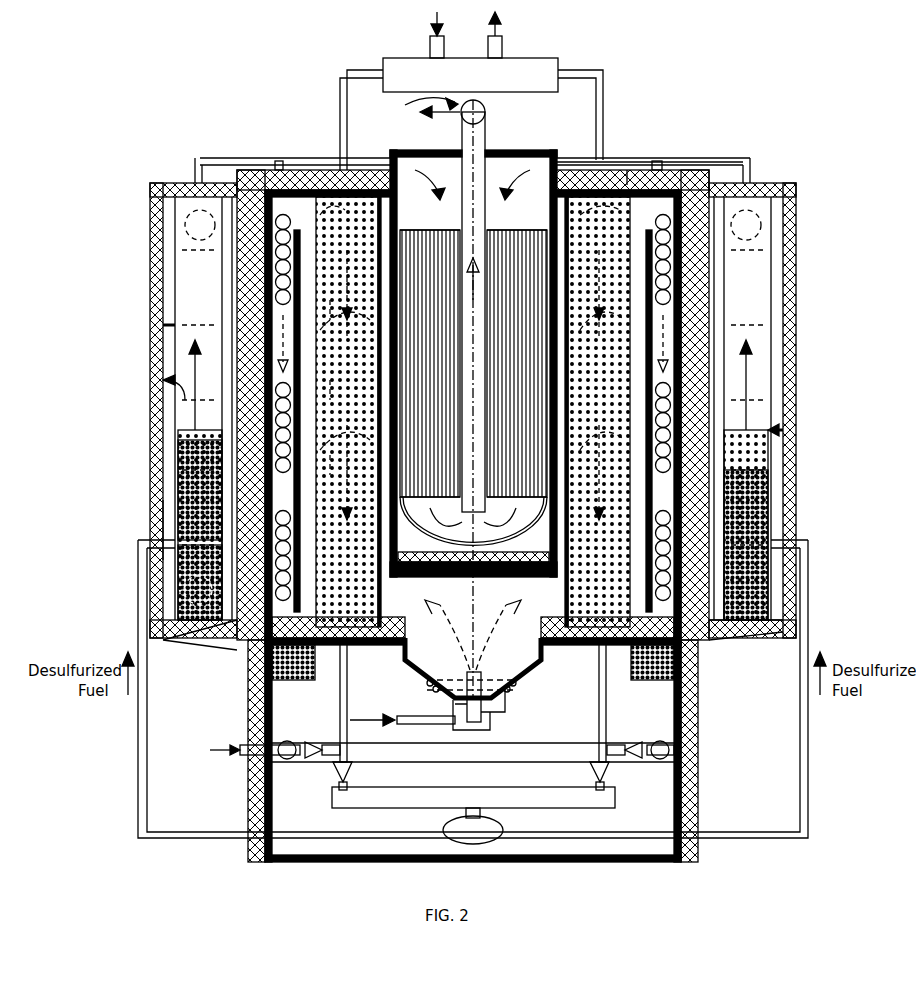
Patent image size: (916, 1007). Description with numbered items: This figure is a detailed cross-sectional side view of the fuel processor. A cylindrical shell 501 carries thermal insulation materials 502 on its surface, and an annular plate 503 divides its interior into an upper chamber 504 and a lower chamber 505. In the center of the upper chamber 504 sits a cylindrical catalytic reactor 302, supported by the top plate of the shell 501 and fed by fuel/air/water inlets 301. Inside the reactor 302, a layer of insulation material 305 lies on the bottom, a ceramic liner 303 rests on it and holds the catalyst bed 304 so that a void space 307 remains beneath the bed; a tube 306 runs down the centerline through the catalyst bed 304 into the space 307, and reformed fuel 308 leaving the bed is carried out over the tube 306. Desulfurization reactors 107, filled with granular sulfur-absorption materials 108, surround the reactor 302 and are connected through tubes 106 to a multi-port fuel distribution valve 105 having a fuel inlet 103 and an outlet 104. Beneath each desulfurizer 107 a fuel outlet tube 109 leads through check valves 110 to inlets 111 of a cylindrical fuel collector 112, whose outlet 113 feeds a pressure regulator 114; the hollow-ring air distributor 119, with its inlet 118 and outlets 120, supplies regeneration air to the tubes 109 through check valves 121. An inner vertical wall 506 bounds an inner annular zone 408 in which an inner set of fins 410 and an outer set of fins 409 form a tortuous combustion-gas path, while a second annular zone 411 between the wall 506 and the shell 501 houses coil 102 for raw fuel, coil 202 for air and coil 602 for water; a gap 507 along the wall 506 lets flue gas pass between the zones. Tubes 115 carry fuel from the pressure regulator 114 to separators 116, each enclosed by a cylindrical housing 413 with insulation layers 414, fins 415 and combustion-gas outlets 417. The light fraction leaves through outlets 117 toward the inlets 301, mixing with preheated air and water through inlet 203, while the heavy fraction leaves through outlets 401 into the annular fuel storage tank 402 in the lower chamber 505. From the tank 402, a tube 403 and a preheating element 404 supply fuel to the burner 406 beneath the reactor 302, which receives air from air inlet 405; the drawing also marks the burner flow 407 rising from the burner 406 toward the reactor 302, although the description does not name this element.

The coil 102 is at (700, 195).
The fuel inlet 103 is at (430, 40).
The outlet 104 is at (500, 38).
The multi-port fuel distribution valve 105 is at (543, 66).
The fuel outlet/air inlet tubes 106 is at (345, 72).
The desulfurization reactors 107 is at (629, 170).
The granular sulfur-absorption materials 108 is at (600, 352).
The fuel outlet tube 109 is at (600, 705).
The check valves 110 is at (640, 755).
The inlets 111 is at (610, 776).
The fuel collector 112 is at (600, 799).
The outlet 113 is at (480, 815).
The pressure regulator 114 is at (473, 830).
The tubes 115 is at (808, 745).
The separators 116 is at (790, 430).
The outlets 117 is at (748, 160).
The inlet 118 is at (285, 752).
The air distributor 119 is at (265, 752).
The outlets 120 is at (318, 765).
The check valves 121 is at (318, 745).
The coil 202 is at (715, 545).
The inlet 203 is at (657, 161).
The fuel/air/water inlets 301 is at (615, 158).
The catalytic reactor 302 is at (515, 152).
The ceramic liner 303 is at (472, 197).
The catalyst bed 304 is at (507, 287).
The insulation material 305 is at (545, 500).
The tube 306 is at (475, 140).
The void space 307 is at (549, 487).
The reformed fuel 308 is at (419, 110).
The outlets 401 is at (728, 632).
The annular fuel storage tank 402 is at (680, 670).
The tube 403 is at (517, 684).
The preheating element 404 is at (513, 689).
The air inlet 405 is at (427, 710).
The burner 406 is at (478, 676).
The flow 407 is at (473, 630).
The inner annular zone 408 is at (250, 530).
The outer set of fins 409 is at (195, 490).
The inner set of fins 410 is at (240, 433).
The second annular zone 411 is at (283, 380).
The cylindrical housing 413 is at (185, 380).
The insulation layers 414 is at (158, 342).
The fins 415 is at (172, 325).
The outlets 417 is at (200, 225).
The cylindrical shell 501 is at (258, 188).
The thermal insulation materials 502 is at (245, 188).
The annular plate 503 is at (310, 662).
The upper chamber 504 is at (350, 675).
The lower chamber 505 is at (300, 818).
The inner vertical wall 506 is at (310, 612).
The gap 507 is at (298, 208).
The coil 602 is at (655, 390).